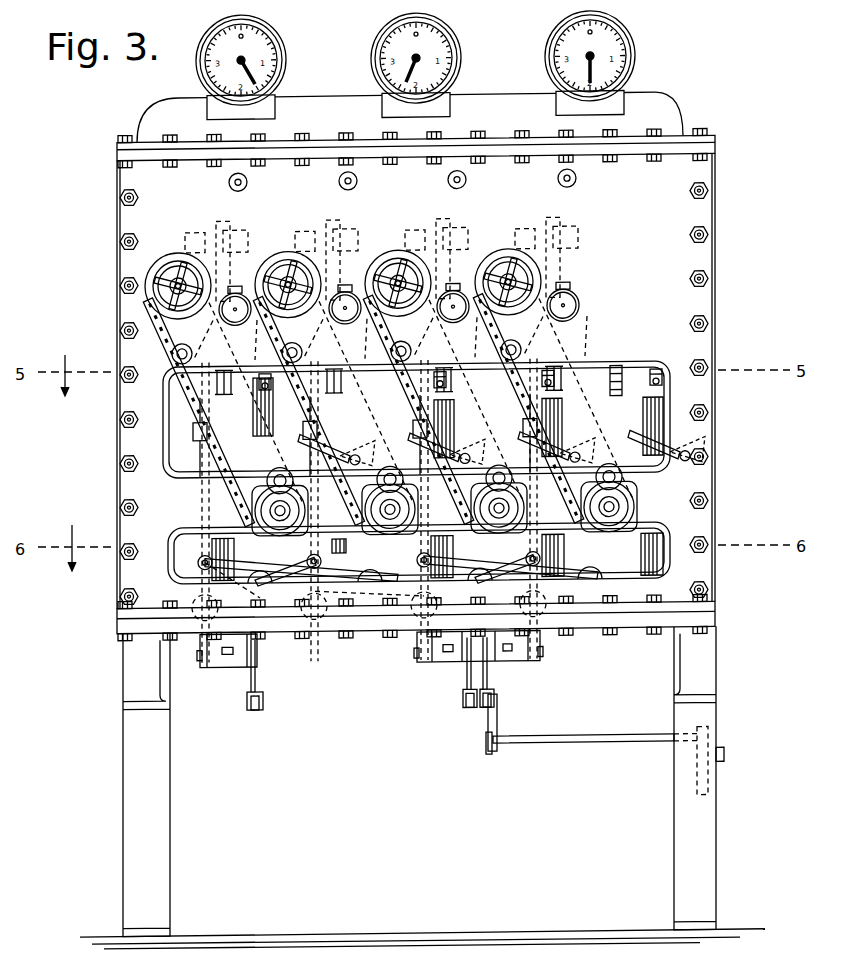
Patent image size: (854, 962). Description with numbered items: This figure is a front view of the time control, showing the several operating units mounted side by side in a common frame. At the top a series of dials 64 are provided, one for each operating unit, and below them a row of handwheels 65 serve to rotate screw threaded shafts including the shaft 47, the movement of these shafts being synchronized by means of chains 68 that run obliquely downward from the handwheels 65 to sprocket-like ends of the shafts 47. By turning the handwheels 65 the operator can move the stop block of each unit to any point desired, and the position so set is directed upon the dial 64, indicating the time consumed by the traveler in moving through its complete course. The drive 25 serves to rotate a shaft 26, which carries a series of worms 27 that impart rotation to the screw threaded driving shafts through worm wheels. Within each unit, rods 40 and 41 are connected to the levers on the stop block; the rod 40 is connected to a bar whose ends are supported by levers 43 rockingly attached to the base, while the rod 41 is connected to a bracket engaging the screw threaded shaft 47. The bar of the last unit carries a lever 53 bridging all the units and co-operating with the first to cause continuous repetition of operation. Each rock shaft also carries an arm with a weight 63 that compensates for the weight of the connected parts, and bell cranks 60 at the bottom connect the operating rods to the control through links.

The drive 25 is at (643, 370).
The shaft 26 is at (293, 382).
The worms 27 is at (332, 382).
The rod 40 is at (322, 460).
The rod 41 is at (203, 458).
The levers 43 is at (303, 567).
The screw threaded shaft 47 is at (278, 513).
The lever 53 is at (618, 398).
The bell cranks 60 is at (257, 680).
The weight 63 is at (452, 553).
The dials 64 is at (608, 50).
The handwheels 65 is at (170, 252).
The chains 68 is at (218, 297).